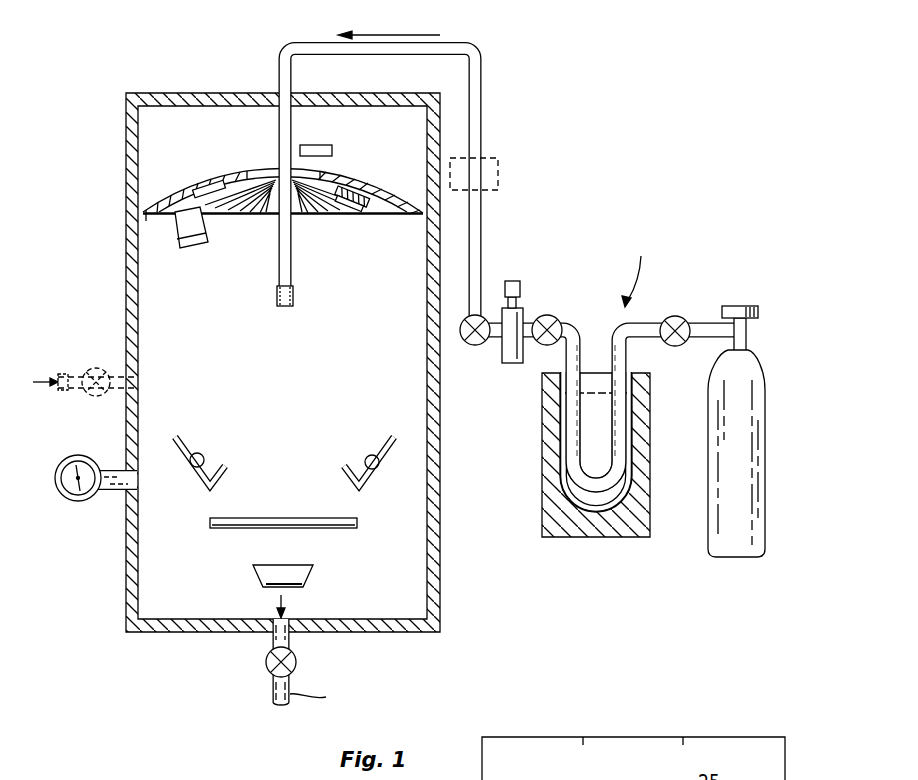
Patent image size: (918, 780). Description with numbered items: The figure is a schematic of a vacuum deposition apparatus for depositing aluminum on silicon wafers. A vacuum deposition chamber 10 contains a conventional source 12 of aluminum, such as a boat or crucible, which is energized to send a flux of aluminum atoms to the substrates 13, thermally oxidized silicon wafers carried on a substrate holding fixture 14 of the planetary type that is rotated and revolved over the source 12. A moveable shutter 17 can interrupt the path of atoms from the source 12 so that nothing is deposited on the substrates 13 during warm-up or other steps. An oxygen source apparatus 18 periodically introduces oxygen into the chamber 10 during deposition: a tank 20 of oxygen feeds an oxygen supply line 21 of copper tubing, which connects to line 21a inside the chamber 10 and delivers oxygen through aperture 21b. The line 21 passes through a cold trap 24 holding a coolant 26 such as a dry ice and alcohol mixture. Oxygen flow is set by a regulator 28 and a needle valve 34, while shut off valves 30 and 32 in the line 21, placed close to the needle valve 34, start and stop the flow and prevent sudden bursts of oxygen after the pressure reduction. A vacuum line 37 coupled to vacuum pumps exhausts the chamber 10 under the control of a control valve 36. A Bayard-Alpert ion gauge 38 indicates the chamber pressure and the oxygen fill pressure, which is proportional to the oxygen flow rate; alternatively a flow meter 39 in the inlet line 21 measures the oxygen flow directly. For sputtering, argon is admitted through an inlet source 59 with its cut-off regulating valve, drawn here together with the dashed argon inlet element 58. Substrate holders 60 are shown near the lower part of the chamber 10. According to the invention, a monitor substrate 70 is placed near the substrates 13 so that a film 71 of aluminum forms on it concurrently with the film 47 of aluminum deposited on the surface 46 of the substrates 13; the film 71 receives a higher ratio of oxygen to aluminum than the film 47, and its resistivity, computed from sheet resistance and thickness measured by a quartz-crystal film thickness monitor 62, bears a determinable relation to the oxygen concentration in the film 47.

The vacuum deposition chamber 10 is at (128, 94).
The source of aluminum 12 is at (313, 570).
The substrates 13 is at (212, 186).
The substrate holding fixture 14 is at (385, 190).
The moveable shutter 17 is at (358, 527).
The oxygen source apparatus 18 is at (654, 249).
The tank 20 is at (765, 478).
The oxygen supply line 21 is at (483, 108).
The line 21a is at (280, 136).
The aperture 21b is at (285, 308).
The cold trap 24 is at (545, 495).
The coolant 26 is at (562, 478).
The regulator 28 is at (664, 346).
The shut off valve 30 is at (557, 345).
The shut off valve 32 is at (486, 345).
The needle valve 34 is at (517, 282).
The control valve 36 is at (266, 662).
The vacuum line 37 is at (272, 694).
The Bayard-Alpert ion gauge 38 is at (78, 502).
The flow meter 39 is at (499, 177).
The surface 46 is at (358, 213).
The film of aluminum 47 is at (342, 206).
The argon valve 58 is at (66, 392).
The inlet source of argon 59 is at (104, 394).
The substrate holders 60 is at (234, 448).
The quartz-crystal film thickness monitor 62 is at (333, 151).
The monitor substrate 70 is at (181, 250).
The film of aluminum 71 is at (204, 249).